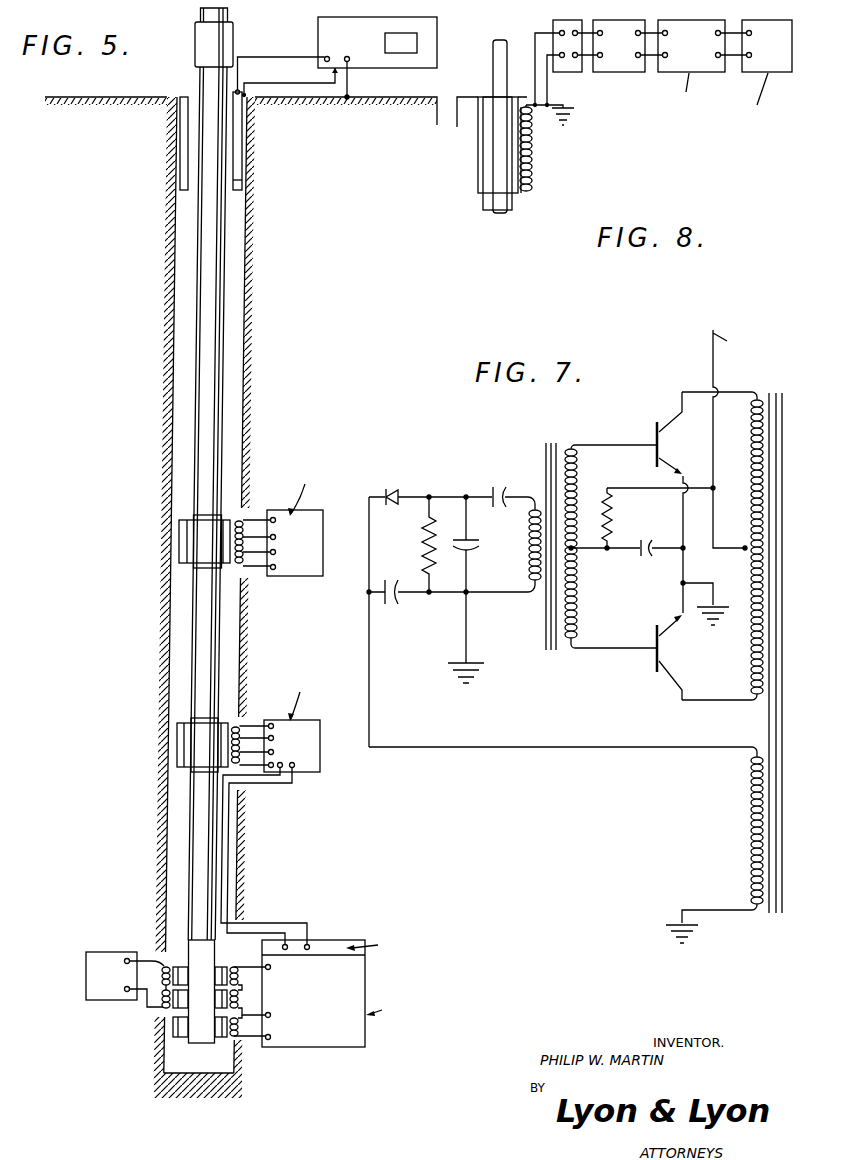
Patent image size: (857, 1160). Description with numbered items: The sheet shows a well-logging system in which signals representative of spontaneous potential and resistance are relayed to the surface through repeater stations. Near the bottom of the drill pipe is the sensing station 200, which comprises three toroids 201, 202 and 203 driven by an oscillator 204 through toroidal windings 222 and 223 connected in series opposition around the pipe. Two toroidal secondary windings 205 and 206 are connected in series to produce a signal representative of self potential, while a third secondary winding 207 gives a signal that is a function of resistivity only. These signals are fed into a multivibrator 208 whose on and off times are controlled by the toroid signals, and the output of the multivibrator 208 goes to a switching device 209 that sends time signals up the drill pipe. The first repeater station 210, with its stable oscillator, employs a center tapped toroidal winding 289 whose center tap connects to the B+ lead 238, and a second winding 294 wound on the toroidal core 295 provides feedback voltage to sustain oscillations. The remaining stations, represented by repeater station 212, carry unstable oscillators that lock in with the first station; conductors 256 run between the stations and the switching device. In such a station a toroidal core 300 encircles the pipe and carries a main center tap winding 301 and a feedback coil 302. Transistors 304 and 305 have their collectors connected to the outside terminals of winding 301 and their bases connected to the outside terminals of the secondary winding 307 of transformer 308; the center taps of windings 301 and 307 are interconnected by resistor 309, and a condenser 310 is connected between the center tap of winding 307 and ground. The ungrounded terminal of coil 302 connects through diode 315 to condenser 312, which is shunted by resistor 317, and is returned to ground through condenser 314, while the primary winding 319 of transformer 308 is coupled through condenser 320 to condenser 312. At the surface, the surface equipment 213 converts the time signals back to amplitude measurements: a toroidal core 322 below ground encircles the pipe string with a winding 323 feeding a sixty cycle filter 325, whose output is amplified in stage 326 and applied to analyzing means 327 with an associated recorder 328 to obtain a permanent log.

In FIG. 5, the surface equipment 213 is at (318, 34).
In FIG. 5, the toroidal core 300 is at (178, 541).
In FIG. 7, the toroidal core 300 is at (782, 381).
In FIG. 5, the repeater station 212 is at (300, 578).
In FIG. 7, the repeater station 212 is at (563, 750).
In FIG. 5, the toroidal core 295 is at (177, 743).
In FIG. 5, the second winding 294 is at (222, 762).
In FIG. 5, the center tapped toroidal winding 289 is at (228, 735).
In FIG. 5, the first repeater station 210 is at (300, 773).
In FIG. 5, the conductors 256 is at (228, 860).
In FIG. 5, the toroid 203 is at (205, 1007).
In FIG. 5, the sensing station 200 is at (152, 1012).
In FIG. 5, the toroid 202 is at (220, 1005).
In FIG. 5, the toroid 201 is at (225, 967).
In FIG. 5, the toroidal winding 222 is at (162, 965).
In FIG. 5, the toroidal winding 223 is at (160, 998).
In FIG. 5, the oscillator 204 is at (86, 975).
In FIG. 5, the toroidal secondary winding 205 is at (240, 978).
In FIG. 5, the toroidal secondary winding 206 is at (240, 999).
In FIG. 5, the third secondary winding 207 is at (240, 1024).
In FIG. 5, the multivibrator 208 is at (330, 1046).
In FIG. 5, the switching device 209 is at (333, 939).
In FIG. 8, the toroidal core 322 is at (483, 172).
In FIG. 8, the winding 323 is at (536, 155).
In FIG. 8, the 60 cycle filter 325 is at (553, 27).
In FIG. 8, the amplifying stage 326 is at (619, 73).
In FIG. 8, the analyzing means 327 is at (693, 60).
In FIG. 8, the recorder 328 is at (750, 68).
In FIG. 7, the diode 315 is at (392, 489).
In FIG. 7, the condenser 320 is at (498, 486).
In FIG. 7, the resistor 317 is at (421, 552).
In FIG. 7, the condenser 312 is at (478, 553).
In FIG. 7, the condenser 314 is at (393, 605).
In FIG. 7, the primary winding 319 is at (530, 578).
In FIG. 7, the transformer 308 is at (543, 458).
In FIG. 7, the secondary winding 307 is at (581, 464).
In FIG. 7, the transistor 304 is at (656, 437).
In FIG. 7, the transistor 305 is at (656, 634).
In FIG. 7, the resistor 309 is at (613, 537).
In FIG. 7, the condenser 310 is at (641, 557).
In FIG. 7, the B+ lead 238 is at (713, 353).
In FIG. 7, the main center tap winding 301 is at (751, 488).
In FIG. 7, the feedback coil 302 is at (751, 849).